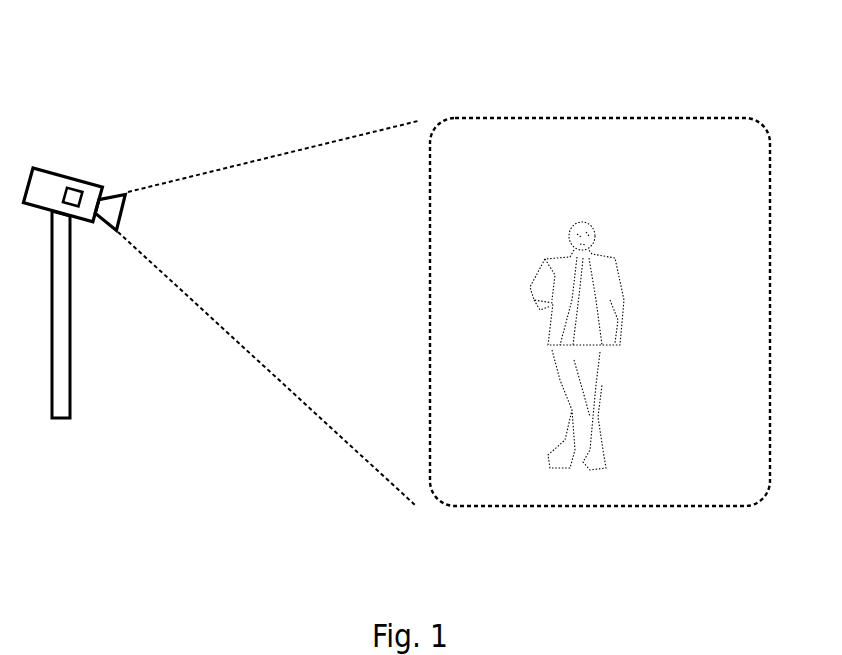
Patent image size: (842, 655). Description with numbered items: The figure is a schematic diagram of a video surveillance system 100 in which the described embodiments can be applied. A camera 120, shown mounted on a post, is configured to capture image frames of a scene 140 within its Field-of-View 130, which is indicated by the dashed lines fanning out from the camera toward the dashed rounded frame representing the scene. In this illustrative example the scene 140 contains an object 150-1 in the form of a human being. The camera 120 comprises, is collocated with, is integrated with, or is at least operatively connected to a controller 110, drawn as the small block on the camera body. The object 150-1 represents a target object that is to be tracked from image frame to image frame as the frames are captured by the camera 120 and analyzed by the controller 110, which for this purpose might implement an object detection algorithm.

The video surveillance system 100 is at (208, 52).
The controller 110 is at (77, 183).
The camera 120 is at (72, 183).
The field of view 130 is at (163, 272).
The scene 140 is at (598, 118).
The object 150-1 is at (593, 452).